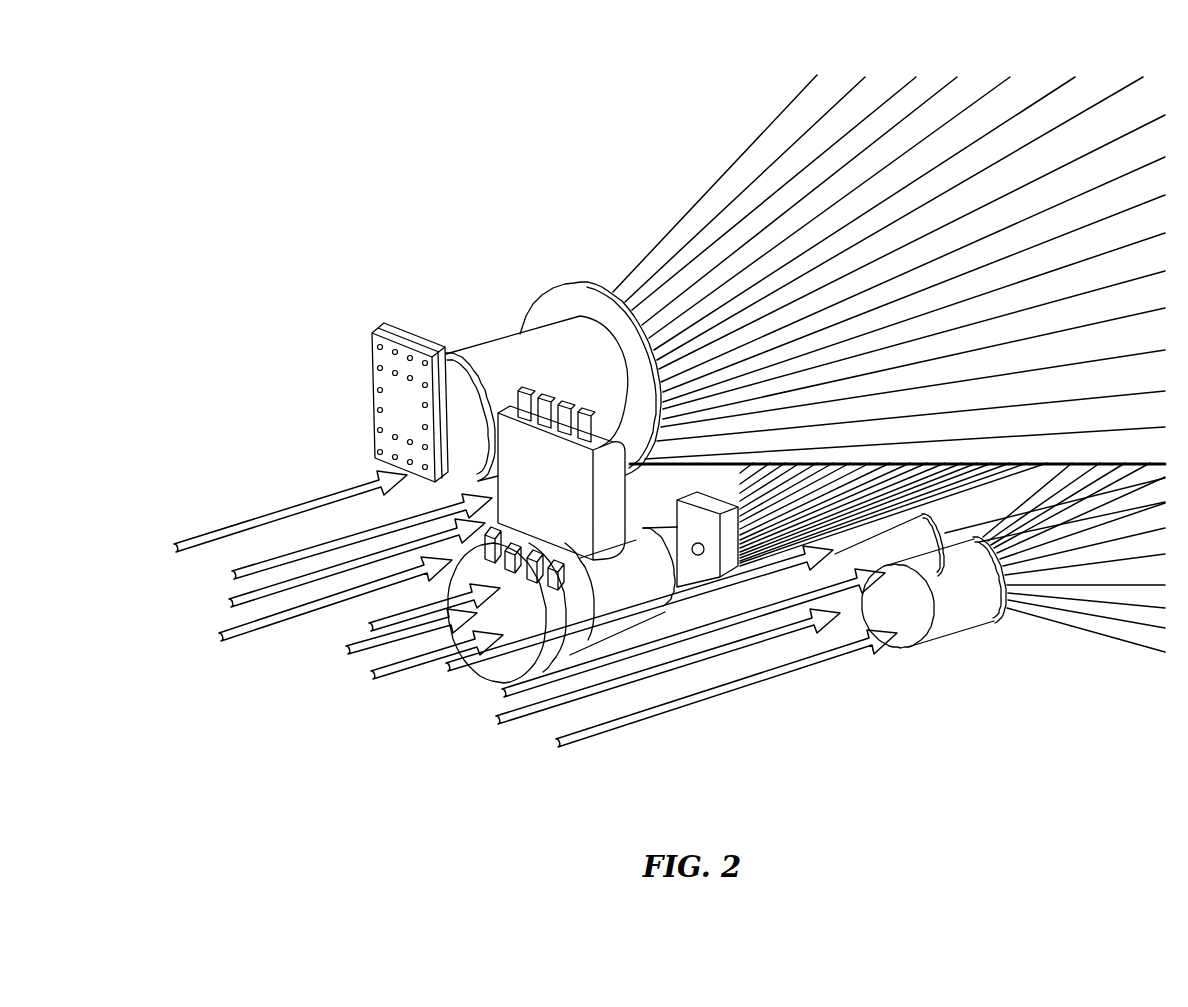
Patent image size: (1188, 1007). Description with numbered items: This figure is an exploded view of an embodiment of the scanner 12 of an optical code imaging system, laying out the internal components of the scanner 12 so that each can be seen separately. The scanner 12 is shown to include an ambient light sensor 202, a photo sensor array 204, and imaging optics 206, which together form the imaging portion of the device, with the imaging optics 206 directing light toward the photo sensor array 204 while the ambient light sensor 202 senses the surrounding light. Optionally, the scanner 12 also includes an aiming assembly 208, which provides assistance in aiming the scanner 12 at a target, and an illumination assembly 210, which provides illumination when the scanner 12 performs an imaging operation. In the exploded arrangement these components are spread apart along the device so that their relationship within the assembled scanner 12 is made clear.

The scanner 12 is at (702, 53).
The ambient light sensor 202 is at (540, 487).
The photo sensor array 204 is at (367, 390).
The imaging optics 206 is at (528, 360).
The aiming assembly 208 is at (528, 623).
The illumination assembly 210 is at (938, 598).